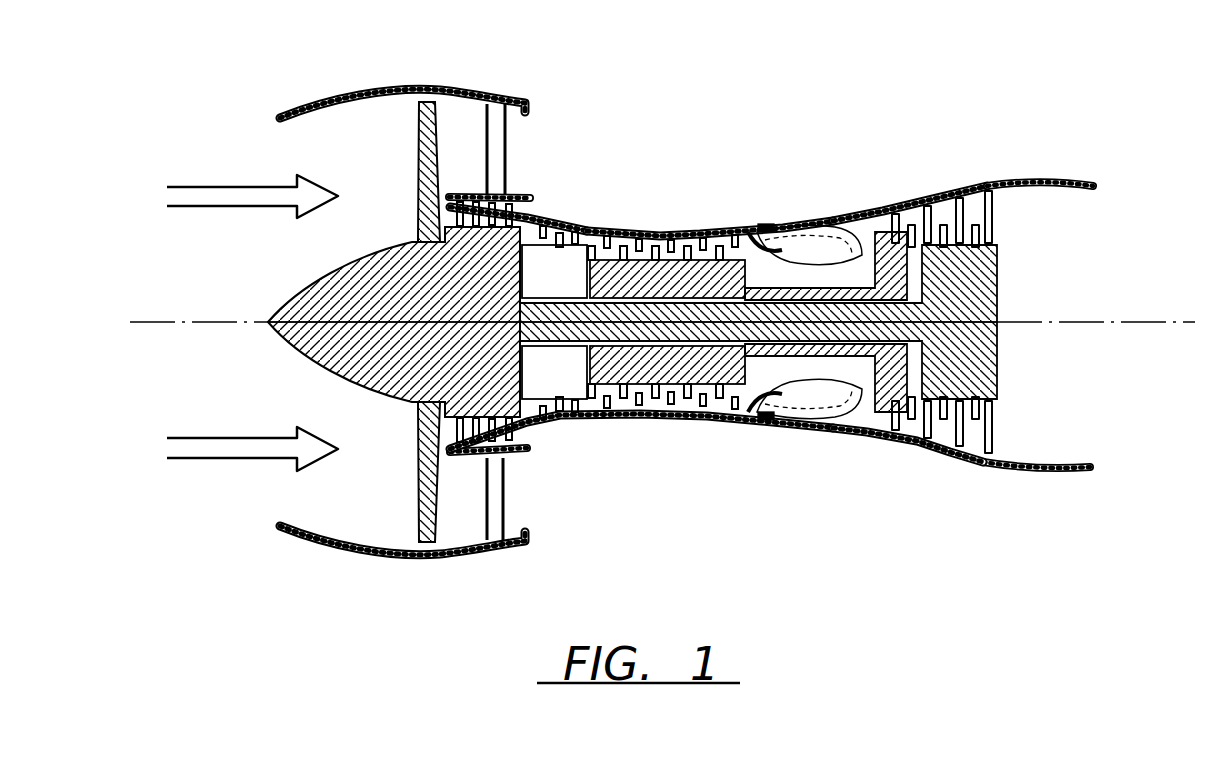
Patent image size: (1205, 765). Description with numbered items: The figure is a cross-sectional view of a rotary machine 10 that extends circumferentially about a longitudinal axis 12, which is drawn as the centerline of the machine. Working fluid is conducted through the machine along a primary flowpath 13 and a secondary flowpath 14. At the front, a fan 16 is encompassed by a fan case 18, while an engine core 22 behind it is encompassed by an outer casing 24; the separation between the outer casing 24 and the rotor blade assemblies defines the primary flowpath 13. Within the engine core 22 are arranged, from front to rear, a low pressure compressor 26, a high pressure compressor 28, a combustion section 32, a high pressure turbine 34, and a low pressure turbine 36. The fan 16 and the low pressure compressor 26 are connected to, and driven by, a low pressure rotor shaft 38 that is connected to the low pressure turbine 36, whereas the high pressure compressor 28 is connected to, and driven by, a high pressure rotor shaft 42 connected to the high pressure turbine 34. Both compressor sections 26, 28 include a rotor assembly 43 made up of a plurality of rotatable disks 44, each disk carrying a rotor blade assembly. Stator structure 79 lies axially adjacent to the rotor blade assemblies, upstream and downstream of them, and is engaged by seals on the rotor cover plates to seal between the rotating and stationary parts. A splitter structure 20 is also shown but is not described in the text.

The rotary machine 10 is at (730, 145).
The longitudinal axis 12 is at (193, 320).
The primary flowpath 13 is at (417, 222).
The secondary flowpath 14 is at (470, 128).
The fan 16 is at (417, 135).
The fan case 18 is at (403, 90).
The core inlet splitter 20 is at (490, 207).
The engine core 22 is at (661, 425).
The outer casing 24 is at (853, 433).
The low pressure compressor 26 is at (527, 210).
The high pressure compressor 28 is at (630, 226).
The combustion section 32 is at (826, 245).
The high pressure turbine 34 is at (908, 200).
The low pressure turbine 36 is at (968, 187).
The low pressure rotor shaft 38 is at (602, 302).
The high pressure rotor shaft 42 is at (800, 265).
The rotor assembly 43 is at (522, 248).
The rotatable disk 44 is at (550, 420).
The stator structure 79 is at (642, 238).